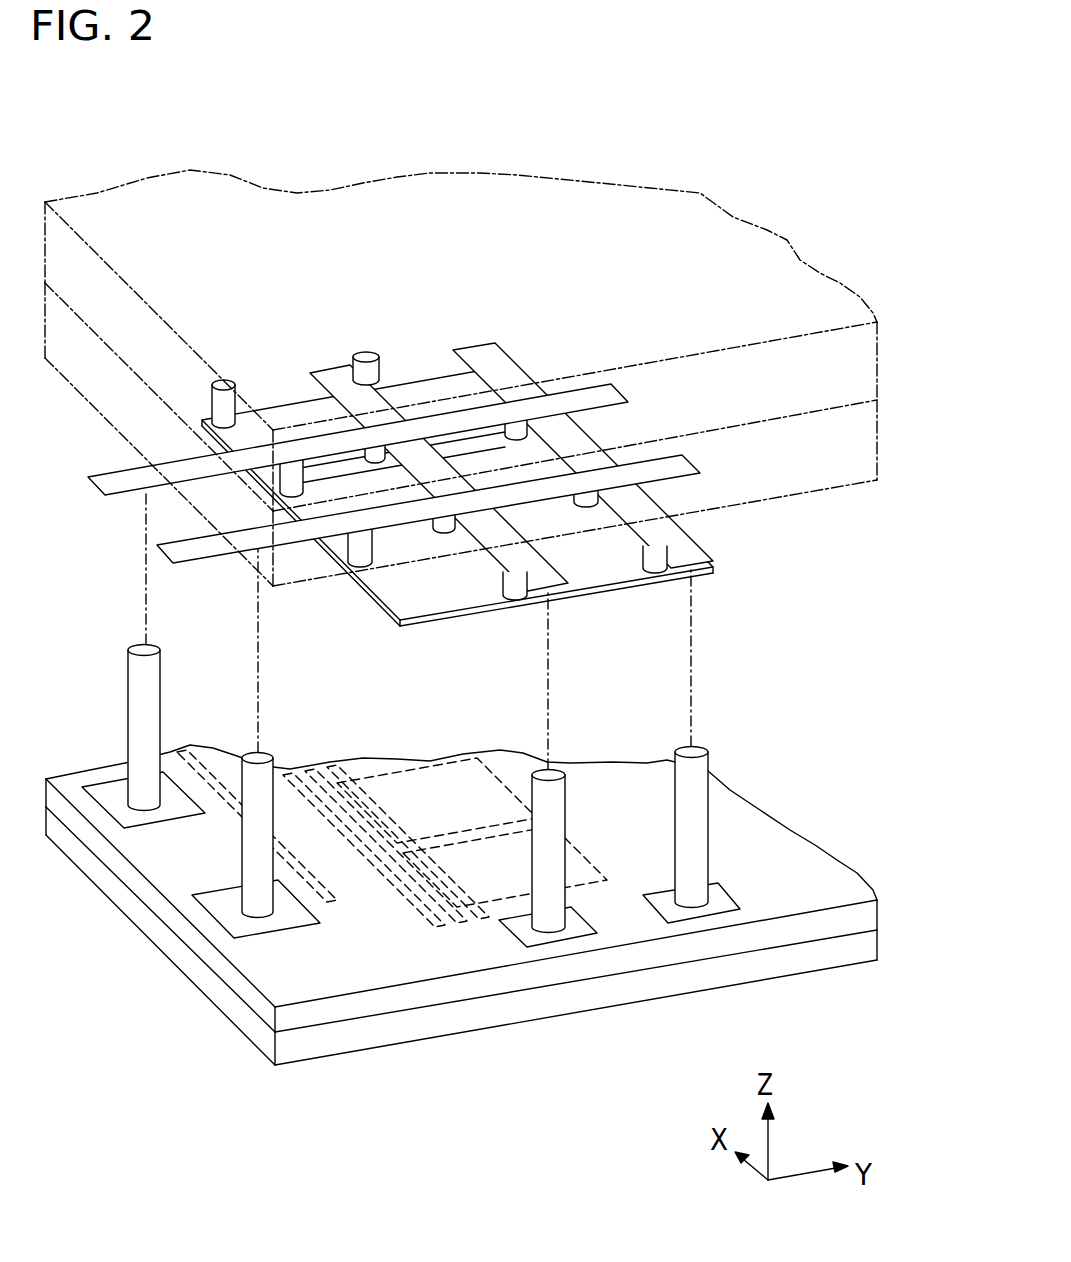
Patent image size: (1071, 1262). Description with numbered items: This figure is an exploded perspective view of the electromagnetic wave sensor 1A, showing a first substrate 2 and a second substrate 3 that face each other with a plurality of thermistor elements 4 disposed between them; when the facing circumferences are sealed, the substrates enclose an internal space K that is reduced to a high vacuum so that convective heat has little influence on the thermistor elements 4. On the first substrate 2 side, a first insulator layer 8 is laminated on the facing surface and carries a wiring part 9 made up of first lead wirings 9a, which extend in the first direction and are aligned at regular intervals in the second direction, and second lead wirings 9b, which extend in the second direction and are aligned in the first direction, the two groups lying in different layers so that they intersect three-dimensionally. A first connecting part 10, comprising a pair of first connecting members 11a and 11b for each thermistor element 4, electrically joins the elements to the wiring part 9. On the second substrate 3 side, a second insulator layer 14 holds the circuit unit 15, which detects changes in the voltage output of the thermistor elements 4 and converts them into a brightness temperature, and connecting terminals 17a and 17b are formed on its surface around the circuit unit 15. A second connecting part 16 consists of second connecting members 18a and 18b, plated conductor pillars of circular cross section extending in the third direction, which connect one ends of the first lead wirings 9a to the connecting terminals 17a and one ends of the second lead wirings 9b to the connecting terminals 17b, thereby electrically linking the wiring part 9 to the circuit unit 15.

The electromagnetic wave sensor 1A is at (172, 122).
The first substrate 2 is at (491, 378).
The first insulator layer 8 is at (858, 441).
The wiring part 9 is at (420, 532).
The first lead wirings 9a is at (562, 594).
The second lead wirings 9b is at (88, 482).
The first connecting part 10 is at (439, 537).
The first connecting member 11a is at (522, 596).
The first connecting member 11b is at (356, 566).
The thermistor element 4 is at (445, 598).
The second substrate 3 is at (496, 905).
The second insulator layer 14 is at (878, 908).
The circuit unit 15 is at (459, 925).
The second connecting part 16 is at (407, 741).
The connecting terminals 17a is at (538, 938).
The connecting terminals 17b is at (115, 806).
The second connecting members 18a is at (550, 815).
The second connecting members 18b is at (136, 698).
The internal space K is at (772, 706).